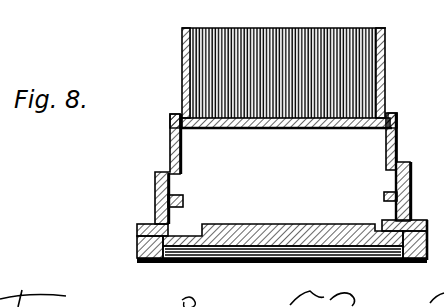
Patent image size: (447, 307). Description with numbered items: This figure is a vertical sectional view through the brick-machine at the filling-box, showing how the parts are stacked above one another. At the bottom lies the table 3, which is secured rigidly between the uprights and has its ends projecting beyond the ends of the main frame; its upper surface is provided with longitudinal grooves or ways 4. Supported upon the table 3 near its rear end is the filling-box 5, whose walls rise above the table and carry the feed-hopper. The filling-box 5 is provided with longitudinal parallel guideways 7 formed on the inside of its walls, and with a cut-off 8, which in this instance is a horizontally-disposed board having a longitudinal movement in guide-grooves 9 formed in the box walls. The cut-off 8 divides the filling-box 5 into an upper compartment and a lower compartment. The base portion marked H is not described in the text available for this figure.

The table 3 is at (300, 230).
The longitudinal grooves or ways 4 is at (187, 233).
The filling-box 5 is at (182, 56).
The longitudinal parallel guideways 7 is at (168, 191).
The cut-off 8 is at (281, 177).
The guide-grooves 9 is at (170, 124).
The base H is at (412, 273).